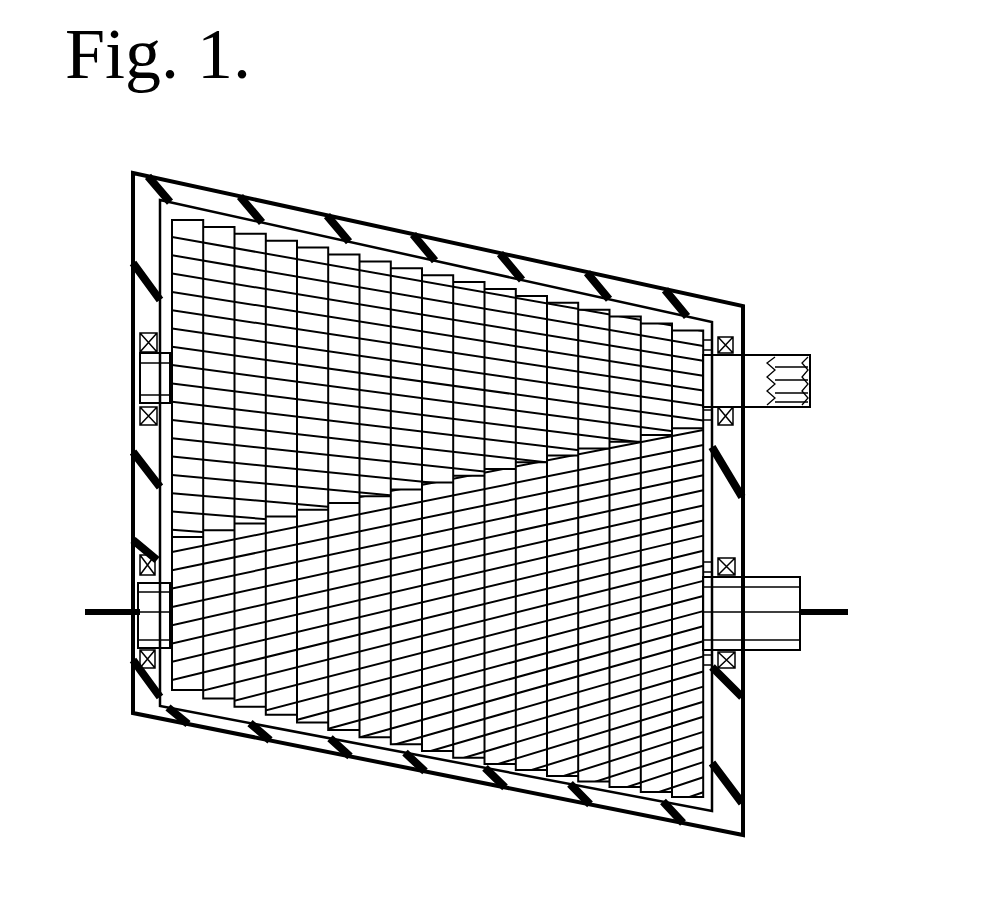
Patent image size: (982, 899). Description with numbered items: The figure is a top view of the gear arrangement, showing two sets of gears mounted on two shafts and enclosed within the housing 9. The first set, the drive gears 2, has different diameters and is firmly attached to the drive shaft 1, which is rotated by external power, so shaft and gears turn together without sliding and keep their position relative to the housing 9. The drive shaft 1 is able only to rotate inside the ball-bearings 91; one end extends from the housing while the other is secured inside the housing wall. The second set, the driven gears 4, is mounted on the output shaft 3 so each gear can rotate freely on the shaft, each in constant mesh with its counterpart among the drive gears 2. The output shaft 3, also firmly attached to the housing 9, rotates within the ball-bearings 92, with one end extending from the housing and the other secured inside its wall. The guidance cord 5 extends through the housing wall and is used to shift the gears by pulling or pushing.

The drive shaft 1 is at (158, 375).
The drive gears 2 is at (615, 377).
The output shaft 3 is at (162, 620).
The driven gears 4 is at (623, 692).
The guidance cord 5 is at (90, 608).
The housing 9 is at (275, 216).
The ball-bearings 91 is at (140, 345).
The ball-bearings 92 is at (138, 665).